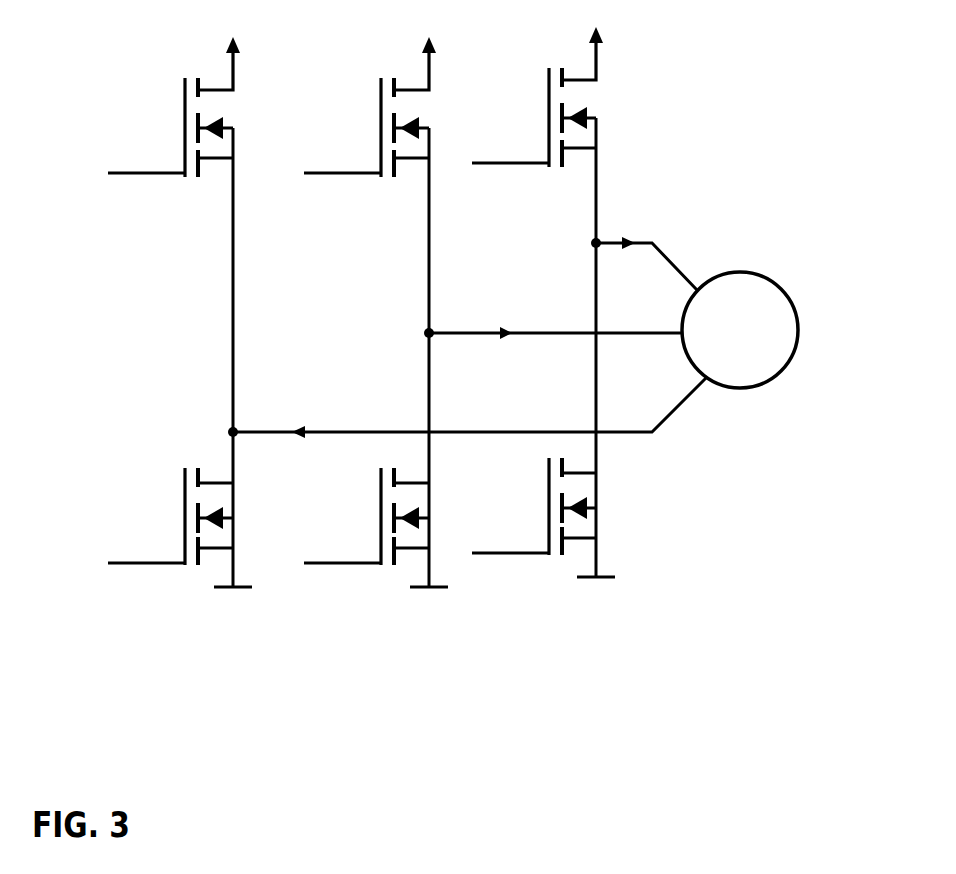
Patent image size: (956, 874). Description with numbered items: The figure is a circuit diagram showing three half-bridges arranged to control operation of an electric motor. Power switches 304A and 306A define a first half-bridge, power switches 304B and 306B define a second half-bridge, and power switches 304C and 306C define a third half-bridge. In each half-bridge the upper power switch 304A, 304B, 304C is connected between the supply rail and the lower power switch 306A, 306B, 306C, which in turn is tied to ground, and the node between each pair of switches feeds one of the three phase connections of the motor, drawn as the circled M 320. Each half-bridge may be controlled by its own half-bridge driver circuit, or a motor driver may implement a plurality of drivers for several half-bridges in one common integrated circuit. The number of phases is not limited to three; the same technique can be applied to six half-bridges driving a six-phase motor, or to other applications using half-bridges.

The power switch 304A is at (184, 125).
The power switch 304B is at (380, 125).
The power switch 304C is at (548, 122).
The power switch 306A is at (184, 525).
The power switch 306B is at (379, 531).
The power switch 306C is at (548, 527).
The motor 320 is at (739, 272).